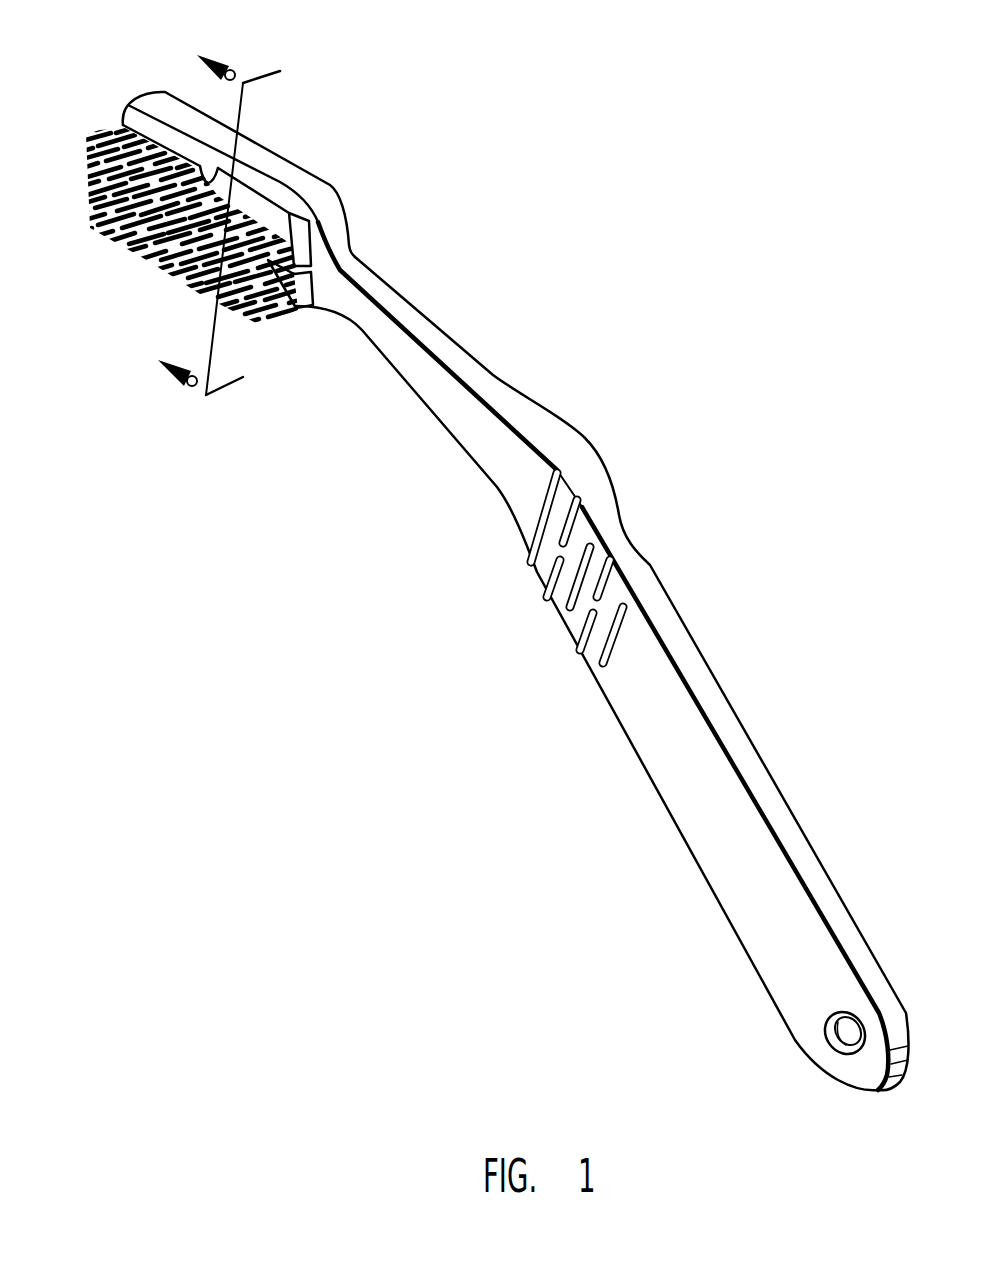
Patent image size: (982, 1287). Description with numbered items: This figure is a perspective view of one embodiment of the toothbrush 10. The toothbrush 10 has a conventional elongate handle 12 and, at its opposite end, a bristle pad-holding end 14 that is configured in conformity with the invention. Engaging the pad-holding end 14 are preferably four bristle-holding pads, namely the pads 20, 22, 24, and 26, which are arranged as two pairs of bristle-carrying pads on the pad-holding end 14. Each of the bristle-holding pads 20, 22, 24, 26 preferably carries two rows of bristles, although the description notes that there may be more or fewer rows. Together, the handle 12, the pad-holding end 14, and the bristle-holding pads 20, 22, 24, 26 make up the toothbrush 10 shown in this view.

The toothbrush 10 is at (712, 313).
The elongate handle 12 is at (735, 732).
The bristle pad-holding end 14 is at (270, 167).
The bristle-holding pad 20 is at (143, 123).
The bristle-holding pad 22 is at (290, 220).
The bristle-holding pad 24 is at (128, 240).
The bristle-holding pad 26 is at (313, 307).